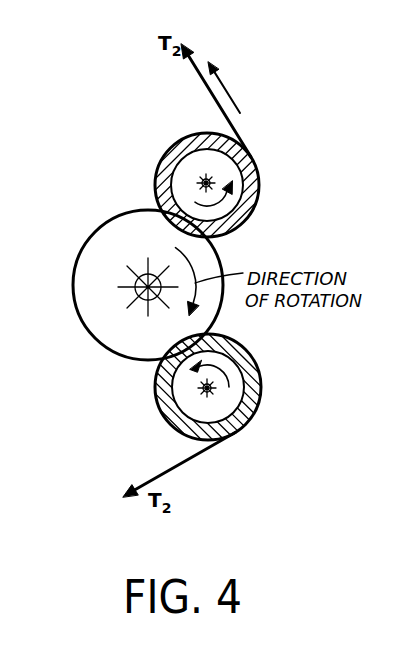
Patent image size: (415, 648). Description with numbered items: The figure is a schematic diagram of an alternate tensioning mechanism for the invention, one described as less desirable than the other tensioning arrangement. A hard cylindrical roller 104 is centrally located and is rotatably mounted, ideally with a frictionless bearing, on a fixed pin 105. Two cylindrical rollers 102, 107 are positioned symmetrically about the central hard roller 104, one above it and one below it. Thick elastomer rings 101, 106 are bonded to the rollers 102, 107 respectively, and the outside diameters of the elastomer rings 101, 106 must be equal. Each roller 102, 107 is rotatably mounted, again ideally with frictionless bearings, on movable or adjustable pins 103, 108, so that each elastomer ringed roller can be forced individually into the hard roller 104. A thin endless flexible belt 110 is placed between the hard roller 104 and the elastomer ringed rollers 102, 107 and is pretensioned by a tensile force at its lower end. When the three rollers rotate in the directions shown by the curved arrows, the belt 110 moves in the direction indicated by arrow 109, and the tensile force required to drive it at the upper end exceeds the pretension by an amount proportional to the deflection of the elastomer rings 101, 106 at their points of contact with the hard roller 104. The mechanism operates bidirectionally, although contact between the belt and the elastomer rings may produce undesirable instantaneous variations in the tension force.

The elastomer ring 101 is at (250, 375).
The cylindrical roller 102 is at (178, 426).
The movable or adjustable pin 103 is at (202, 388).
The hard cylindrical roller 104 is at (105, 253).
The fixed pin 105 is at (140, 292).
The elastomer ring 106 is at (168, 153).
The cylindrical roller 107 is at (227, 165).
The movable or adjustable pin 108 is at (213, 177).
The arrow 109 is at (230, 91).
The thin endless flexible belt 110 is at (203, 63).